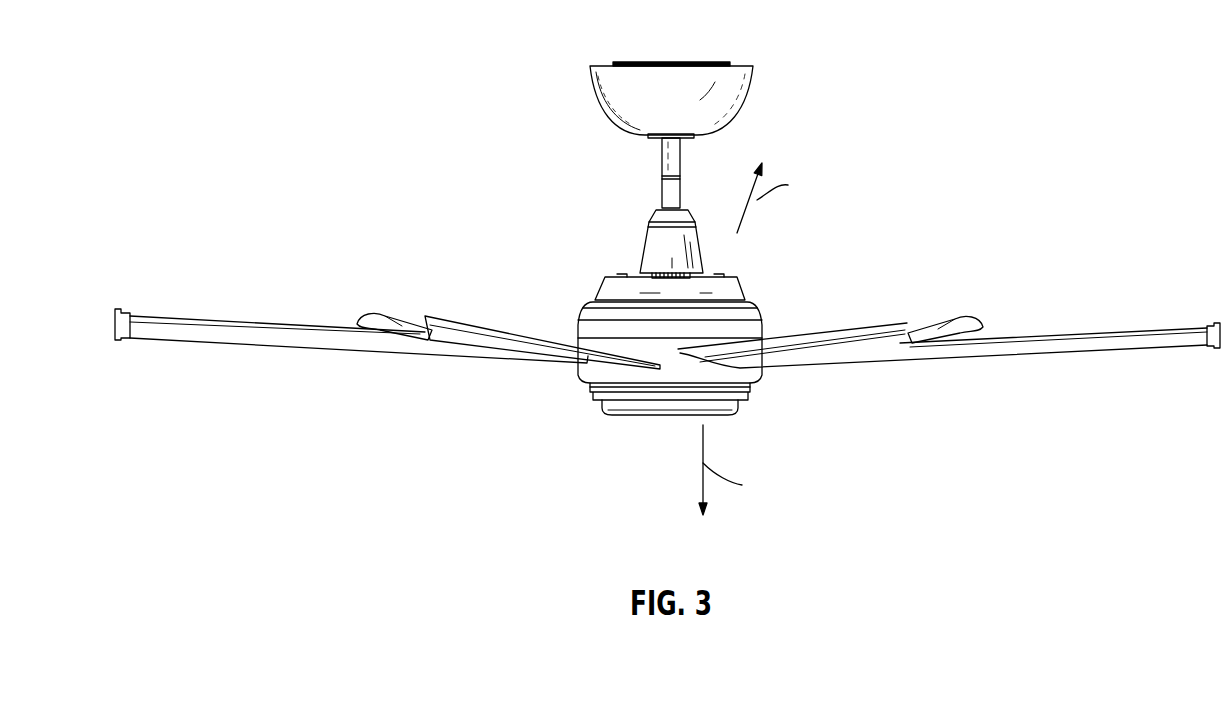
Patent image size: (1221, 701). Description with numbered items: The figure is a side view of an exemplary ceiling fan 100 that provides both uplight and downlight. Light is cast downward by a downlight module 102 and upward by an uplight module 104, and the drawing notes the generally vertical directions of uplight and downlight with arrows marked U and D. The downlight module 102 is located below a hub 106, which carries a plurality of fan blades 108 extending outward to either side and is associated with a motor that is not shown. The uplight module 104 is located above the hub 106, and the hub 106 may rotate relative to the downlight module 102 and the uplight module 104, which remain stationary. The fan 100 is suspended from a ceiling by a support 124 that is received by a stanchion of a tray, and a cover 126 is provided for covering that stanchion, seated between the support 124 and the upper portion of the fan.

The ceiling fan 100 is at (667, 273).
The downlight module 102 is at (631, 399).
The uplight module 104 is at (762, 258).
The hub 106 is at (583, 380).
The fan blades 108 is at (1097, 338).
The support 124 is at (667, 190).
The cover 126 is at (653, 232).